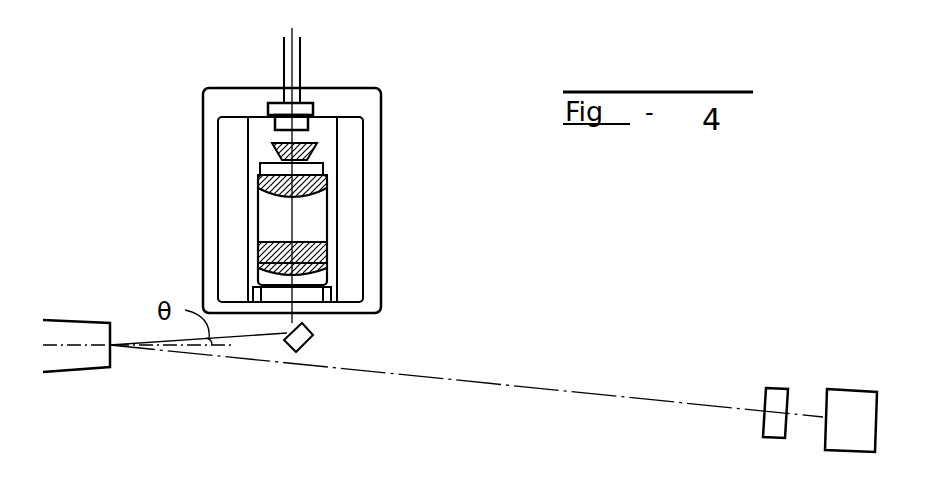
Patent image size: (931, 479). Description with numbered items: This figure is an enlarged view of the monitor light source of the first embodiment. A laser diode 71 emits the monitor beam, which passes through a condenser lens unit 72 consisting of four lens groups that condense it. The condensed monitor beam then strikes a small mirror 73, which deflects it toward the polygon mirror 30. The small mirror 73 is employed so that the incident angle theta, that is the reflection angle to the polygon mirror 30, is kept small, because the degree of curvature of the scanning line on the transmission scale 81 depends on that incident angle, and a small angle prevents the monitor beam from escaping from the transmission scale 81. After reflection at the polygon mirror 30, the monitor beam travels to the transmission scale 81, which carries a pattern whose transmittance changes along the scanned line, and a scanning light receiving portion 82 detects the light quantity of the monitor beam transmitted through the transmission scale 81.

The polygon mirror 30 is at (83, 355).
The laser diode 71 is at (308, 123).
The condenser lens unit 72 is at (353, 207).
The small mirror 73 is at (313, 335).
The transmission scale 81 is at (778, 390).
The scanning light receiving portion 82 is at (843, 390).